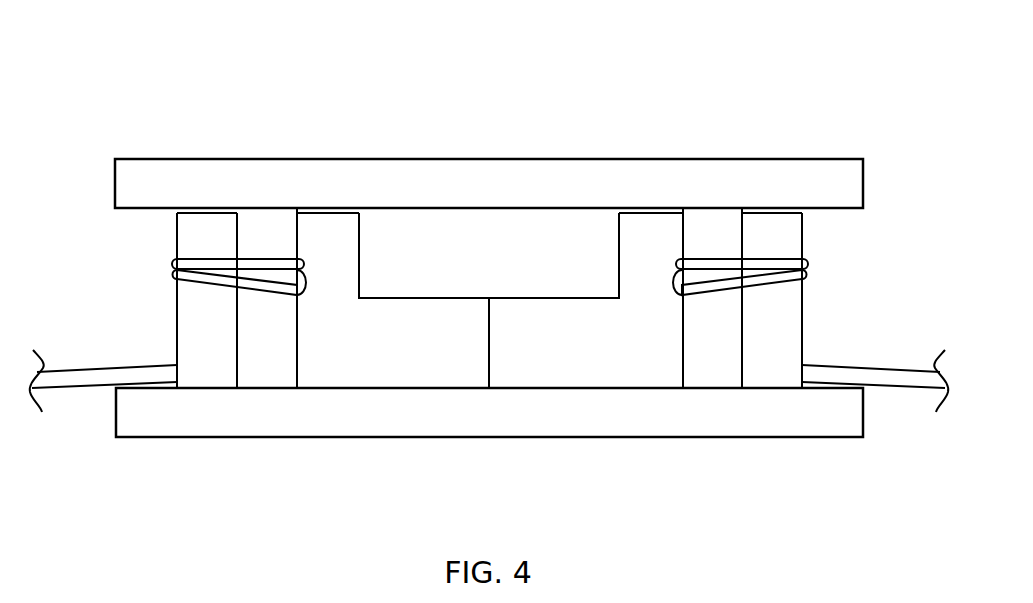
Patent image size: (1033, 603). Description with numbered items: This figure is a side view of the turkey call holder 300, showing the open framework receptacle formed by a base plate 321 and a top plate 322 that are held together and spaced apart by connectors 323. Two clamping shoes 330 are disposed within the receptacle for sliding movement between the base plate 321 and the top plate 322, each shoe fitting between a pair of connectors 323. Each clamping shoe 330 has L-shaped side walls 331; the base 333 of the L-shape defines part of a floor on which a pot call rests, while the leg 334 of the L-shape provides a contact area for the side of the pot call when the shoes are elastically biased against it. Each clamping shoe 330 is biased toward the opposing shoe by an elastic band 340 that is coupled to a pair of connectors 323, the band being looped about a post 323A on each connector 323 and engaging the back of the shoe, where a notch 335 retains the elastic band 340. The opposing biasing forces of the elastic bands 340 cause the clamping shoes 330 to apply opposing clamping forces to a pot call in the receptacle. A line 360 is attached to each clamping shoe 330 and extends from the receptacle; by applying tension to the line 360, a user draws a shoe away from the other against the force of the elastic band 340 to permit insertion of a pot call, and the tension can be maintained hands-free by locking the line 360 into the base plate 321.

The turkey call holder 300 is at (110, 78).
The base plate 321 is at (152, 422).
The top plate 322 is at (149, 180).
The connector 323 is at (266, 230).
The post 323A is at (307, 280).
The clamping shoe 330 is at (177, 334).
The side wall 331 is at (345, 362).
The base of the L-shape 333 is at (434, 298).
The leg of the L-shape 334 is at (360, 228).
The notch 335 is at (173, 262).
The elastic band 340 is at (176, 273).
The line 360 is at (57, 390).